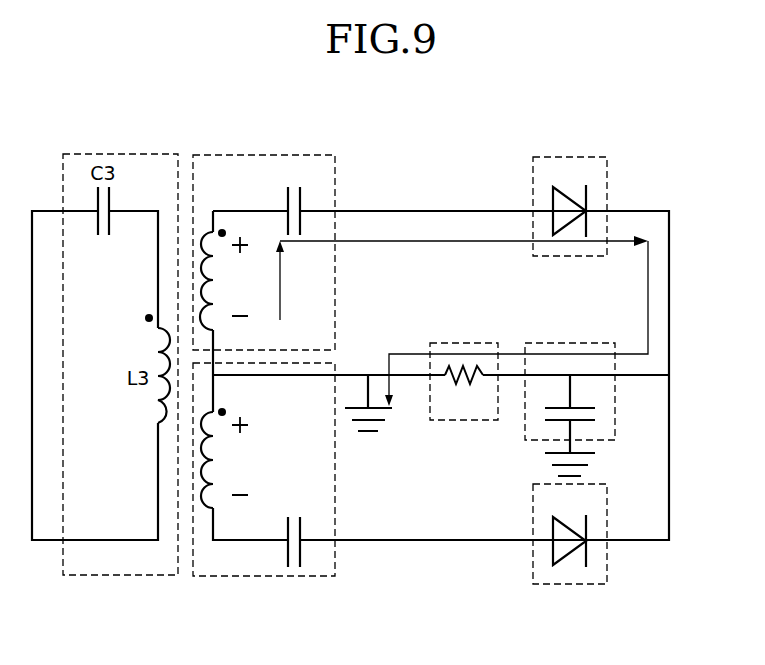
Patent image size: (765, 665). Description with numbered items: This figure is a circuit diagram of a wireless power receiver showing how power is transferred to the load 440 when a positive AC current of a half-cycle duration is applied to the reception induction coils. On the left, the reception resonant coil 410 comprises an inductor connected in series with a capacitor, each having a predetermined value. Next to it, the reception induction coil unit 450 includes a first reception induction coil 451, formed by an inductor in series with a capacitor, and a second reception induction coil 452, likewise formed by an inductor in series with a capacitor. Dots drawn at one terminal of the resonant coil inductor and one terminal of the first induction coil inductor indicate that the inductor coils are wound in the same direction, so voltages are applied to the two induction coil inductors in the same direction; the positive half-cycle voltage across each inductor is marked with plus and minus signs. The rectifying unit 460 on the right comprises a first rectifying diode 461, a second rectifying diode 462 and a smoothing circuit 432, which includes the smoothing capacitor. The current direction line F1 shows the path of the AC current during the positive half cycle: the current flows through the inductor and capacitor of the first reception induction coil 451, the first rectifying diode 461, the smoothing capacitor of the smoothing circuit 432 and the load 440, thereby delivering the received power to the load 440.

The reception resonant coil 410 is at (125, 154).
The first reception induction coil 451 is at (273, 155).
The second reception induction coil 452 is at (281, 576).
The reception induction coil unit 450 is at (297, 367).
The load 440 is at (473, 343).
The smoothing circuit 432 is at (566, 343).
The first rectifying diode 461 is at (565, 157).
The second rectifying diode 462 is at (565, 584).
The rectifying unit 460 is at (628, 371).
The current direction line F1 is at (436, 241).